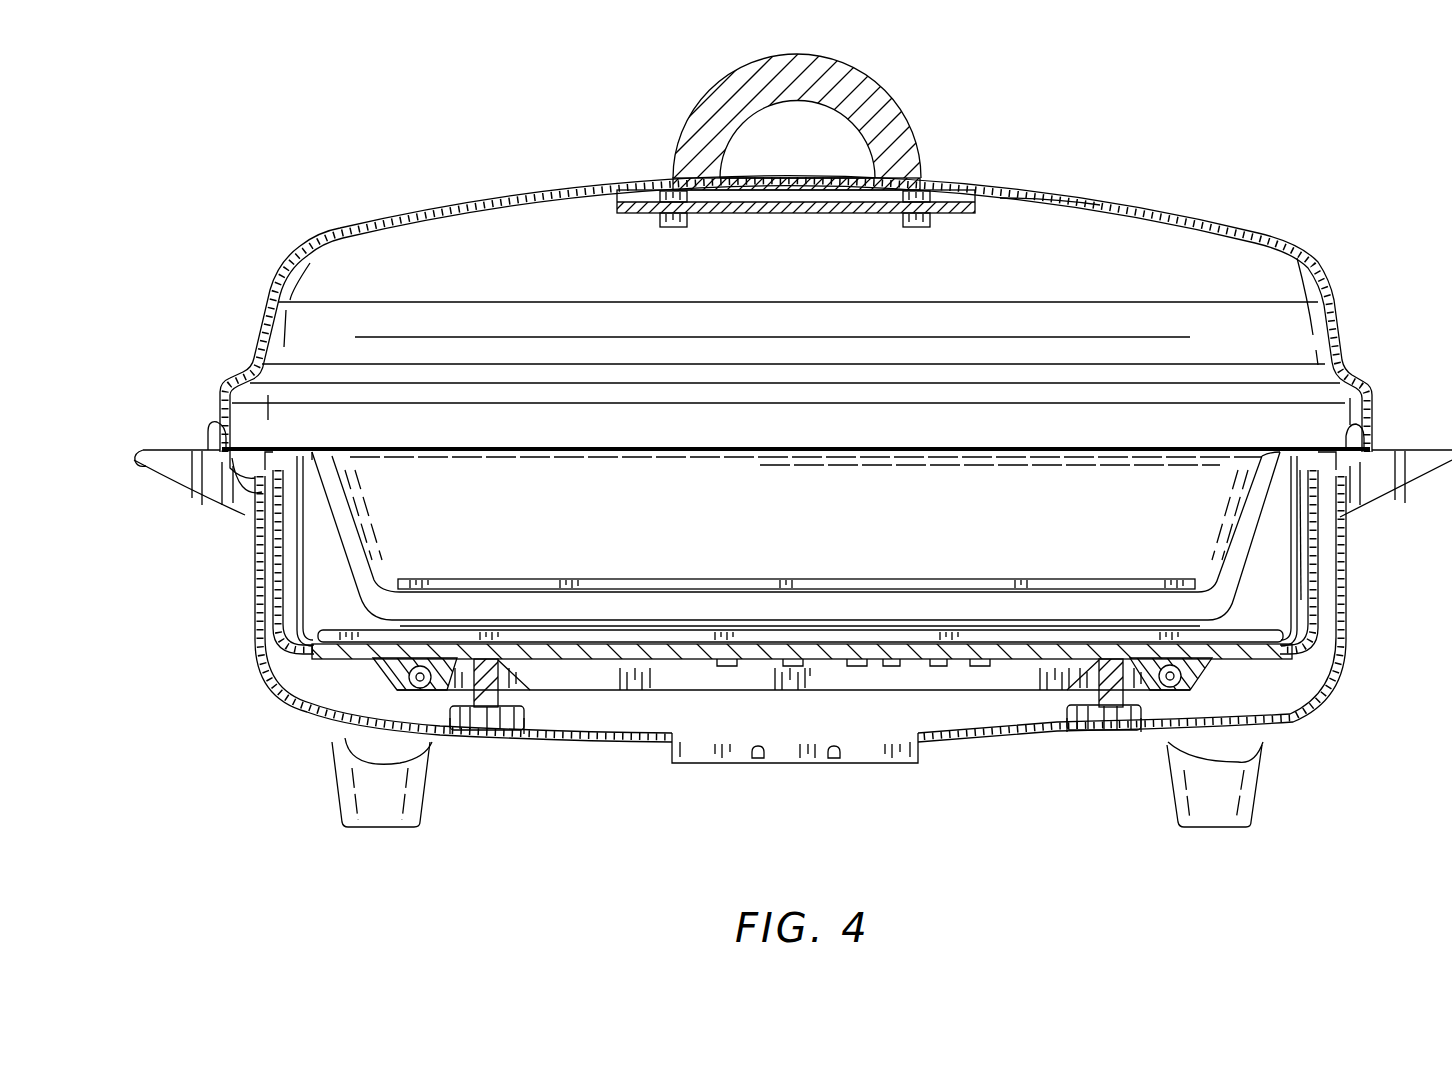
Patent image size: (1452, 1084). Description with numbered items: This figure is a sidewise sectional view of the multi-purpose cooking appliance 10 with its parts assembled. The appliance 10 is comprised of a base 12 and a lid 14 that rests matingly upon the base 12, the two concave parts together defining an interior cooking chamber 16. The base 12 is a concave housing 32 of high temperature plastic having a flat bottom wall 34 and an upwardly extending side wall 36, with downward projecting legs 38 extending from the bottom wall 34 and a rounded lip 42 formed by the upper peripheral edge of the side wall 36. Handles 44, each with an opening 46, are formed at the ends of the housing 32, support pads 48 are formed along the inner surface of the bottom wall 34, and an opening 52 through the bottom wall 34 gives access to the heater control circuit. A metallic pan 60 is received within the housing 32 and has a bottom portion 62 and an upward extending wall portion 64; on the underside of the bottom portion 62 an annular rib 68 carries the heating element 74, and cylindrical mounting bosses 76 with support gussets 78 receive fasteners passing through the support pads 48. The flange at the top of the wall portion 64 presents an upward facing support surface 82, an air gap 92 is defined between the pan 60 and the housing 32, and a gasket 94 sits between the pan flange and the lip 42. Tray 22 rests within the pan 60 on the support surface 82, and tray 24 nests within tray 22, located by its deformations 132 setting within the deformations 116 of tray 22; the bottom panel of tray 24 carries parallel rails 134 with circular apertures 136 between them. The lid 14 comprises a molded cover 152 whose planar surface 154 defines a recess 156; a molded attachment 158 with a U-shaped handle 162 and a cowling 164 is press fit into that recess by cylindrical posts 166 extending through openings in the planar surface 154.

The multi-purpose cooking appliance 10 is at (1220, 176).
The base 12 is at (1346, 655).
The lid 14 is at (1316, 237).
The interior cooking chamber 16 is at (597, 418).
The tray 22 is at (346, 603).
The tray 24 is at (972, 497).
The housing 32 is at (272, 696).
The bottom wall 34 is at (598, 738).
The side wall 36 is at (256, 670).
The legs 38 is at (407, 797).
The lip 42 is at (236, 497).
The handles 44 is at (138, 454).
The opening 46 is at (180, 478).
The support pads 48 is at (540, 724).
The opening 52 is at (792, 760).
The pan 60 is at (318, 670).
The bottom portion 62 is at (366, 638).
The wall portion 64 is at (282, 557).
The annular rib 68 is at (876, 677).
The heating element 74 is at (1180, 682).
The mounting bosses 76 is at (490, 724).
The support gussets 78 is at (505, 670).
The support surface 82 is at (1303, 544).
The air gap 92 is at (1328, 601).
The gasket 94 is at (1363, 497).
The deformations 116 is at (1284, 452).
The deformations 132 is at (1254, 447).
The rails 134 is at (650, 580).
The circular apertures 136 is at (870, 585).
The cover 152 is at (1052, 192).
The planar surface 154 is at (772, 214).
The recess 156 is at (900, 206).
The molded attachment 158 is at (696, 100).
The handle 162 is at (862, 120).
The cowling 164 is at (830, 177).
The cylindrical posts 166 is at (668, 230).